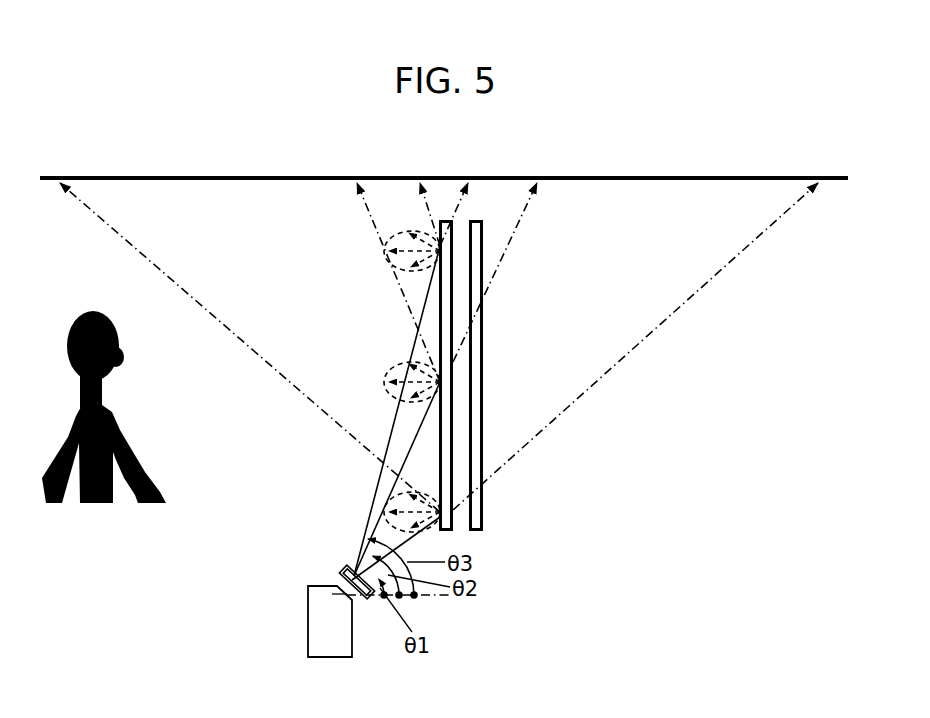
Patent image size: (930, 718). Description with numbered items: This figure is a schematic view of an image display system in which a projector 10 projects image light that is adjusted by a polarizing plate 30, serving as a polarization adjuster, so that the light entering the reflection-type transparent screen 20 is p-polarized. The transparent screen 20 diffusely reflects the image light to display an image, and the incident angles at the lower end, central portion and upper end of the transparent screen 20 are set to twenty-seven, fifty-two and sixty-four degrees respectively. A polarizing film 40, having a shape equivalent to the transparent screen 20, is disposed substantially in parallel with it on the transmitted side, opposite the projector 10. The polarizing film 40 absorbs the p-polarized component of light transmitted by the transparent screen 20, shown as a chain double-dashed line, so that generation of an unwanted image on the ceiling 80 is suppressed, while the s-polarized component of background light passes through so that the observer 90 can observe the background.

The projector 10 is at (352, 657).
The reflection-type transparent screen 20 is at (453, 432).
The polarizing plate 30 is at (347, 570).
The polarizing film 40 is at (483, 523).
The ceiling 80 is at (230, 179).
The observer 90 is at (120, 427).